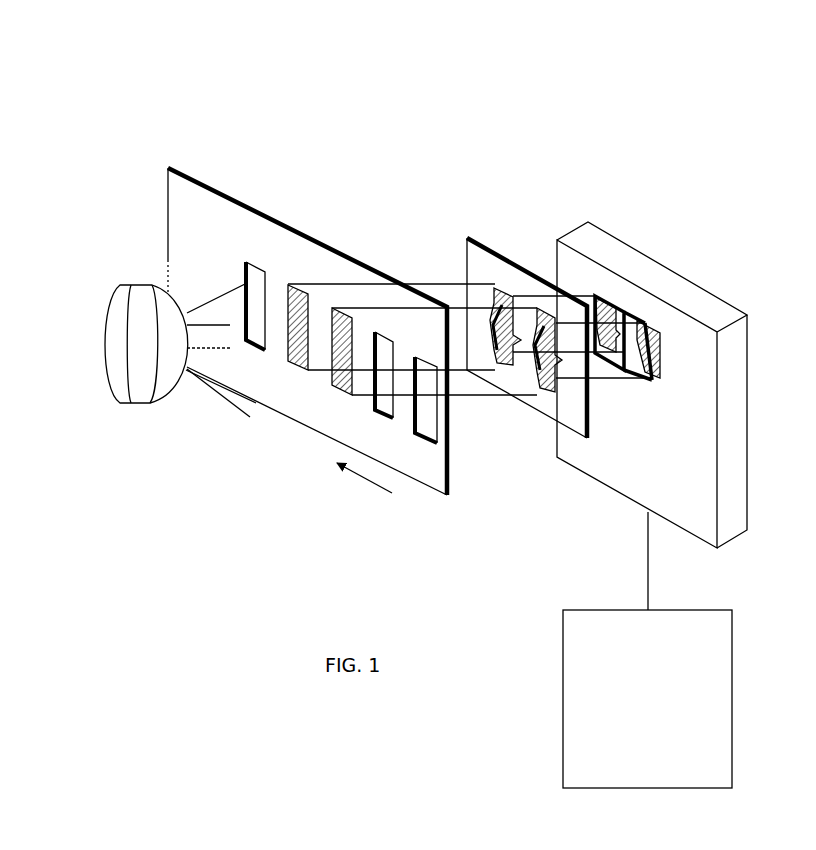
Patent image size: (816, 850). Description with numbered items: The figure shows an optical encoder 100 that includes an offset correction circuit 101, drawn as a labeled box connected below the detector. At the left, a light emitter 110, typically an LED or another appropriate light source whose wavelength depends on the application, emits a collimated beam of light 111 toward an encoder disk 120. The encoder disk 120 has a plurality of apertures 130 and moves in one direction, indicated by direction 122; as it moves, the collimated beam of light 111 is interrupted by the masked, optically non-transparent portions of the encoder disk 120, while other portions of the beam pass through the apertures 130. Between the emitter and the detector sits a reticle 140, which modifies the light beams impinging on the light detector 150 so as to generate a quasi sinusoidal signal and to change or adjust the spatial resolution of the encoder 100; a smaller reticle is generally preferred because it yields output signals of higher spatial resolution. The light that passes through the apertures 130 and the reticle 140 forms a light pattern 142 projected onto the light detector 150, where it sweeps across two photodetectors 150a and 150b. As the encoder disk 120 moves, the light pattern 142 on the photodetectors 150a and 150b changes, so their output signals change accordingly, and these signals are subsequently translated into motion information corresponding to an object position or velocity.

The optical encoder 100 is at (586, 38).
The offset correction circuit 101 is at (663, 643).
The light emitter 110 is at (118, 368).
The collimated beam of light 111 is at (210, 401).
The encoder disk 120 is at (192, 213).
The direction 122 is at (337, 537).
The apertures 130 is at (255, 277).
The reticle 140 is at (473, 258).
The light pattern 142 is at (498, 283).
The light detector 150 is at (594, 245).
The photodetector 150a is at (607, 297).
The photodetector 150b is at (640, 320).